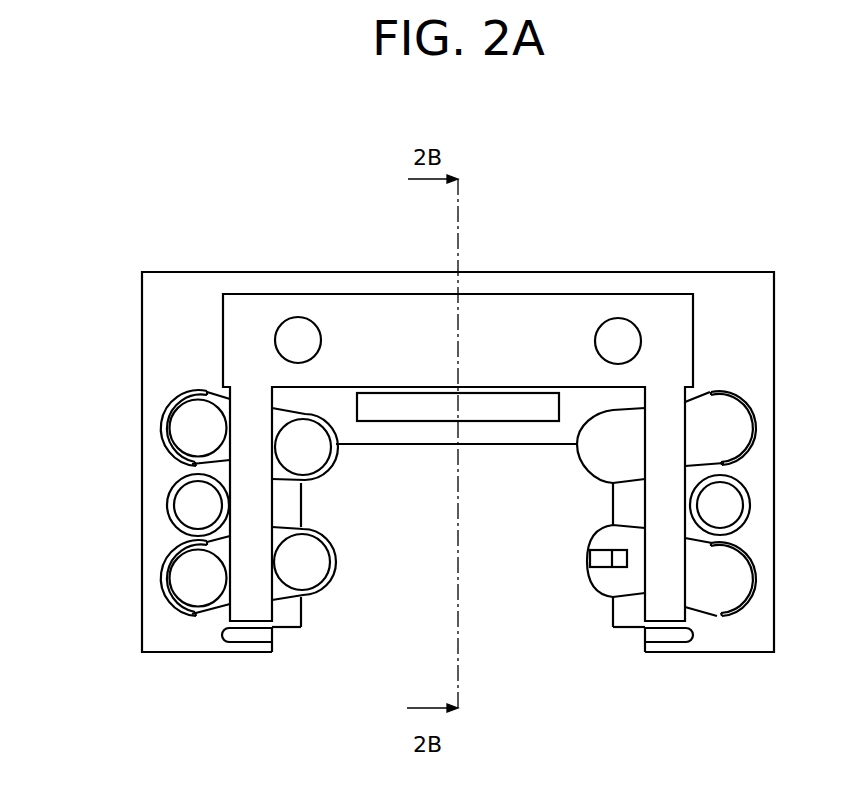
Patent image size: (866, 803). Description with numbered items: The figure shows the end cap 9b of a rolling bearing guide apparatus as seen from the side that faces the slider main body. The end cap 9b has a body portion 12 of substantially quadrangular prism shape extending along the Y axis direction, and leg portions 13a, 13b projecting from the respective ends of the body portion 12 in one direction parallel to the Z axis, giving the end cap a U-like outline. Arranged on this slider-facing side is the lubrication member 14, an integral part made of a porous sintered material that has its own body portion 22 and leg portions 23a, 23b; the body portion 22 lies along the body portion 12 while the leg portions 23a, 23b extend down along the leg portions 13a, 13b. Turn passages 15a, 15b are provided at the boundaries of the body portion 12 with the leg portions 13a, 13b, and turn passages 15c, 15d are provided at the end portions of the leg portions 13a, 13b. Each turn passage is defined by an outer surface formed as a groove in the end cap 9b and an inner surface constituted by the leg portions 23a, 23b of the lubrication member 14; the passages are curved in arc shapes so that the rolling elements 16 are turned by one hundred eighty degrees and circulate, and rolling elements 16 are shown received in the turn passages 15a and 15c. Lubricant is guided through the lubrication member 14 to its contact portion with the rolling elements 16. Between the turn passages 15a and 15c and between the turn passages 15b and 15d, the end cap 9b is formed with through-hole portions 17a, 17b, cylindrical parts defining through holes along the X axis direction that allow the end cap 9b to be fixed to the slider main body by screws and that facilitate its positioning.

The end cap 9b is at (302, 214).
The body portion 12 is at (655, 282).
The leg portion 13a is at (210, 636).
The leg portion 13b is at (722, 633).
The lubrication member 14 is at (502, 292).
The turn passage 15a is at (220, 402).
The turn passage 15b is at (725, 423).
The turn passage 15c is at (222, 607).
The turn passage 15d is at (725, 592).
The rolling elements 16 is at (185, 423).
The through-hole portion 17a is at (207, 522).
The through-hole portion 17b is at (710, 523).
The body portion 22 is at (397, 328).
The leg portion 23a is at (255, 507).
The leg portion 23b is at (662, 507).